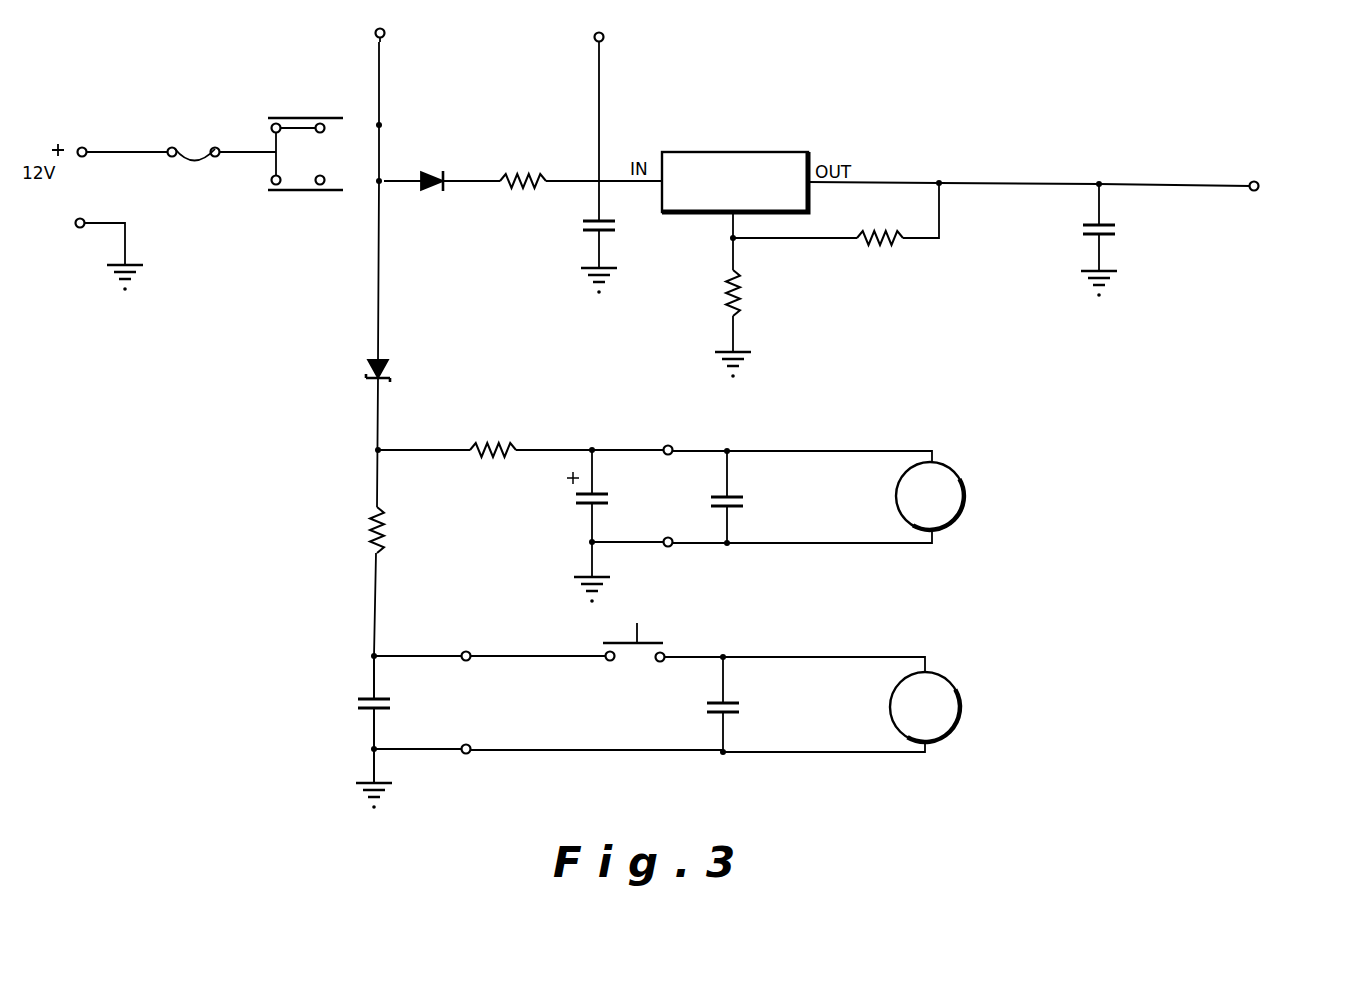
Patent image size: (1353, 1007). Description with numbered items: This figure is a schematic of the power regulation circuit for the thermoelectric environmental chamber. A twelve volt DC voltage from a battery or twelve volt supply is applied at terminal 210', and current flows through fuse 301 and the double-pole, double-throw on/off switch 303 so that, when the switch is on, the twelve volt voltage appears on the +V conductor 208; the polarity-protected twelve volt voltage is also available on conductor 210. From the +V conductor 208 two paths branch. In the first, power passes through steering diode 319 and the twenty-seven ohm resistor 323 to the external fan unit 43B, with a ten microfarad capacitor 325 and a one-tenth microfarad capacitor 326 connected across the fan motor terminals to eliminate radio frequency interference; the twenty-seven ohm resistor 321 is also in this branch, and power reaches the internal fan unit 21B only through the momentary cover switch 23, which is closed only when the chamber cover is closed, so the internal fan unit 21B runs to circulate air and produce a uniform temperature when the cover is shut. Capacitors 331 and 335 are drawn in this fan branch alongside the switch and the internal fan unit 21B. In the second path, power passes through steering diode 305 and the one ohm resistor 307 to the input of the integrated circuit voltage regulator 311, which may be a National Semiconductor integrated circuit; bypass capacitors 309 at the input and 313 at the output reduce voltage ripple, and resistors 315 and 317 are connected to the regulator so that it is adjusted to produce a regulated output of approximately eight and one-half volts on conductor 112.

The +V conductor 208 is at (372, 38).
The conductor 210 is at (599, 105).
The terminal 210' is at (113, 169).
The fuse 301 is at (190, 157).
The on/off switch 303 is at (303, 195).
The steering diode 305 is at (445, 178).
The one ohm resistor 307 is at (512, 176).
The bypass capacitor 309 is at (592, 232).
The integrated circuit voltage regulator 311 is at (762, 147).
The bypass capacitor 313 is at (1108, 236).
The resistor 315 is at (895, 250).
The resistor 317 is at (742, 280).
The conductor 112 is at (1250, 181).
The steering diode 319 is at (368, 380).
The 27 ohm resistor 321 is at (386, 510).
The 27 ohm resistor 323 is at (512, 433).
The 10 microfarad capacitor 325 is at (597, 494).
The 0.1 microfarad capacitor 326 is at (733, 496).
The external fan unit 43B is at (950, 472).
The cover switch 23 is at (653, 642).
The capacitor 331 is at (380, 698).
The capacitor 335 is at (730, 702).
The internal fan unit 21B is at (945, 677).